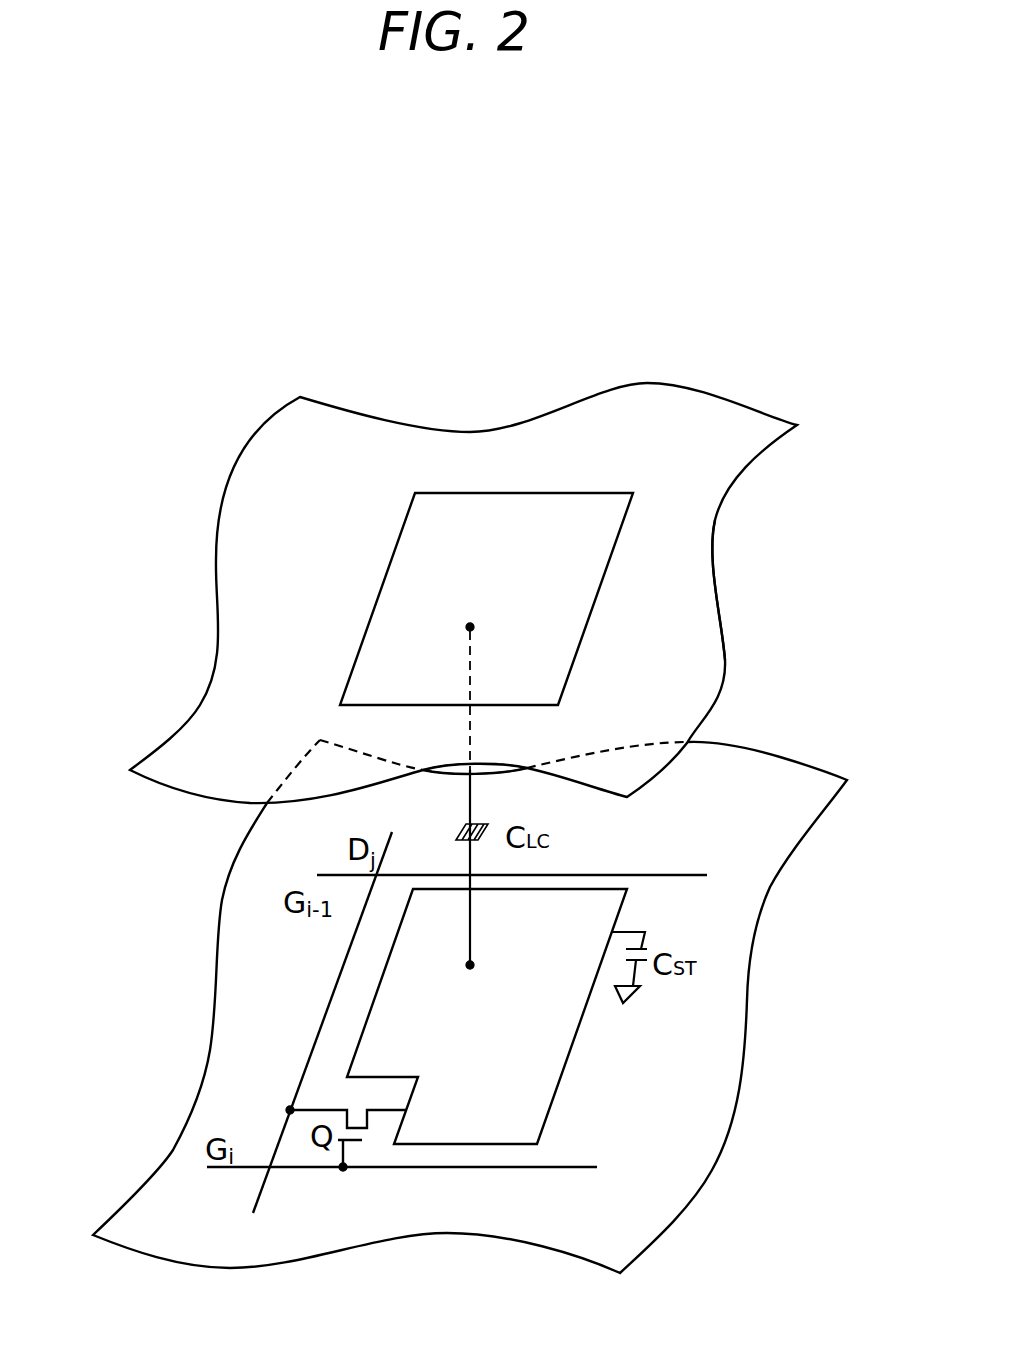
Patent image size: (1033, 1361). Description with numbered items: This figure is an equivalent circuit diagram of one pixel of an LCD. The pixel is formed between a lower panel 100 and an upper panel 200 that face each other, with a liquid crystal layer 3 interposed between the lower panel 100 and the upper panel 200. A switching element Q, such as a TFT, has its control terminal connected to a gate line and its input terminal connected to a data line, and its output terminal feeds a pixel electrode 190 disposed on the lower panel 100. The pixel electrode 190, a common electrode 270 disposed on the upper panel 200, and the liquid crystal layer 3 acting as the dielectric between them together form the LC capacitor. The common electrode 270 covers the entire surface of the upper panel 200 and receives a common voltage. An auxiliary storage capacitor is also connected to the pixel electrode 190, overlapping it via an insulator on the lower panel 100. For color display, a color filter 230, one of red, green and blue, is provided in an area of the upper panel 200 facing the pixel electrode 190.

The liquid crystal layer 3 is at (132, 890).
The lower panel 100 is at (749, 981).
The pixel electrode 190 is at (565, 1072).
The upper panel 200 is at (737, 627).
The color filter 230 is at (594, 615).
The common electrode 270 is at (716, 562).